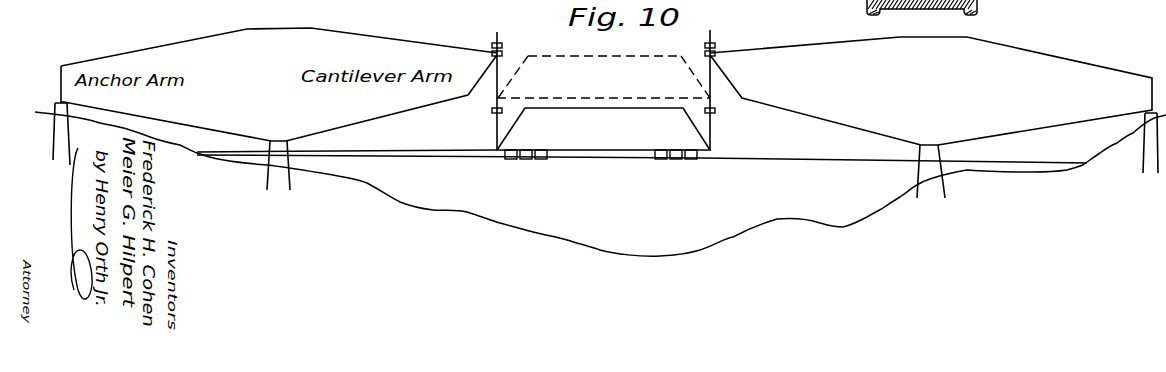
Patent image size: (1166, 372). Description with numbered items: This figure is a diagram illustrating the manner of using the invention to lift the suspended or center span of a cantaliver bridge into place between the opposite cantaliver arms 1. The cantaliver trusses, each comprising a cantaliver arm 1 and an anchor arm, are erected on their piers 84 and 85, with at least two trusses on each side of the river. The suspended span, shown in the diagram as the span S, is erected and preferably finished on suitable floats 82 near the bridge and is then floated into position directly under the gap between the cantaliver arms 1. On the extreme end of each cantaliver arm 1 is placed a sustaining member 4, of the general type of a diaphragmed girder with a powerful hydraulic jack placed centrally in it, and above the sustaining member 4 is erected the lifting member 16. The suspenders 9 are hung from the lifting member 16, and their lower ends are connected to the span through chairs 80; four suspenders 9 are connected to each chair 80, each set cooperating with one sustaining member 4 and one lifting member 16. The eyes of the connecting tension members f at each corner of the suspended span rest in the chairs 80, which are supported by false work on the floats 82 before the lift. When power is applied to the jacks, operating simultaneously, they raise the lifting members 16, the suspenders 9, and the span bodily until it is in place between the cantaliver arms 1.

The cantaliver arm 1 is at (418, 42).
The connecting tension member f is at (496, 131).
The lifting member 16 is at (501, 45).
The sustaining member 4 is at (502, 53).
The chair 80 is at (493, 110).
The suspender 9 is at (503, 82).
The scow / floating support S is at (603, 129).
The float 82 is at (511, 159).
The pier 84 is at (285, 146).
The pier 85 is at (57, 103).